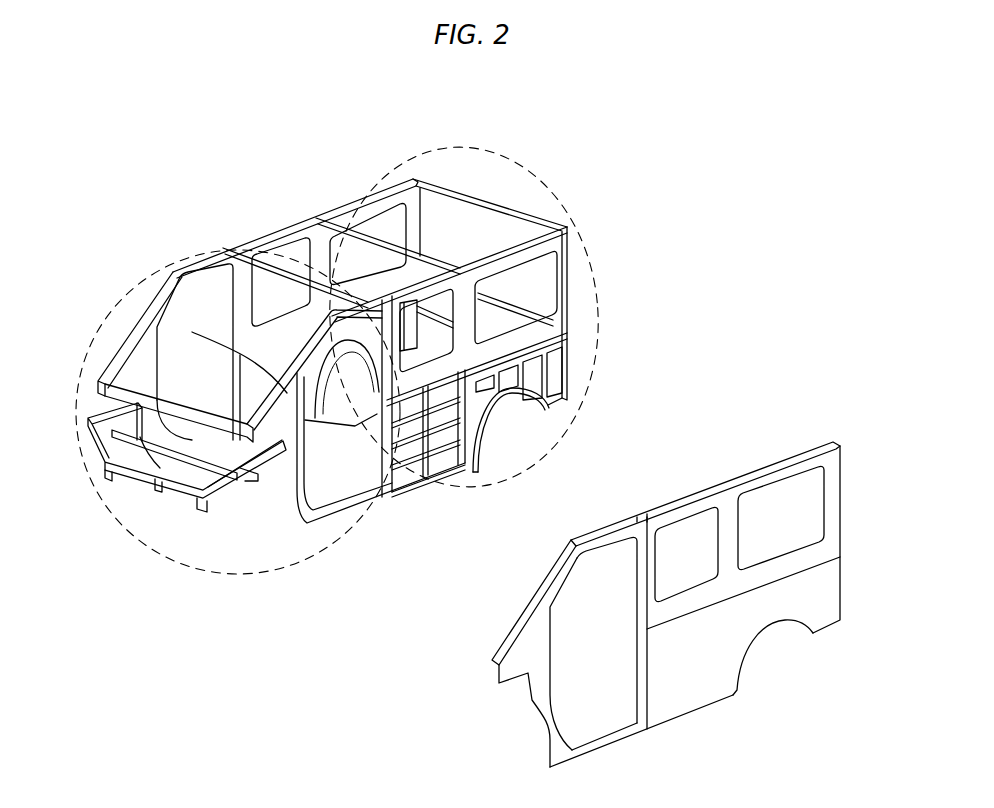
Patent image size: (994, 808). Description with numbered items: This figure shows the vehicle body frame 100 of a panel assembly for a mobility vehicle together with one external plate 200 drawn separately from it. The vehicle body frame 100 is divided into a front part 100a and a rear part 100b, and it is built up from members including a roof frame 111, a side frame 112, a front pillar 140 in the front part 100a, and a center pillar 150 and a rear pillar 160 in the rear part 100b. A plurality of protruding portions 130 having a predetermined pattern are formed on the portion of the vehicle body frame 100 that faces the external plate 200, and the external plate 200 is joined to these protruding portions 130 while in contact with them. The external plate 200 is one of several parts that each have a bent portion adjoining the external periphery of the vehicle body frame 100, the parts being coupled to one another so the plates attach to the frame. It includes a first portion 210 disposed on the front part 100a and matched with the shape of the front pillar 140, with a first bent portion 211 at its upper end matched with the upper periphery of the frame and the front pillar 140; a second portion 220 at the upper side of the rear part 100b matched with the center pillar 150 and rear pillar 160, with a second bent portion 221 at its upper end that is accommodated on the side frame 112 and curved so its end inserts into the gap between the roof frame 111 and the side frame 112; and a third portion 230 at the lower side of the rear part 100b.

The vehicle body frame 100 is at (288, 190).
The front part of the vehicle body frame 100a is at (241, 576).
The rear part of the vehicle body frame 100b is at (413, 150).
The roof frame 111 is at (433, 253).
The side frame 112 is at (513, 252).
The protruding portions 130 is at (403, 463).
The front pillar 140 is at (192, 332).
The center pillar 150 is at (463, 323).
The rear pillar 160 is at (567, 277).
The external plate 200 is at (783, 665).
The first portion 210 is at (535, 700).
The first bent portion 211 is at (617, 523).
The second portion 220 is at (730, 533).
The second bent portion 221 is at (727, 480).
The third portion 230 is at (705, 680).